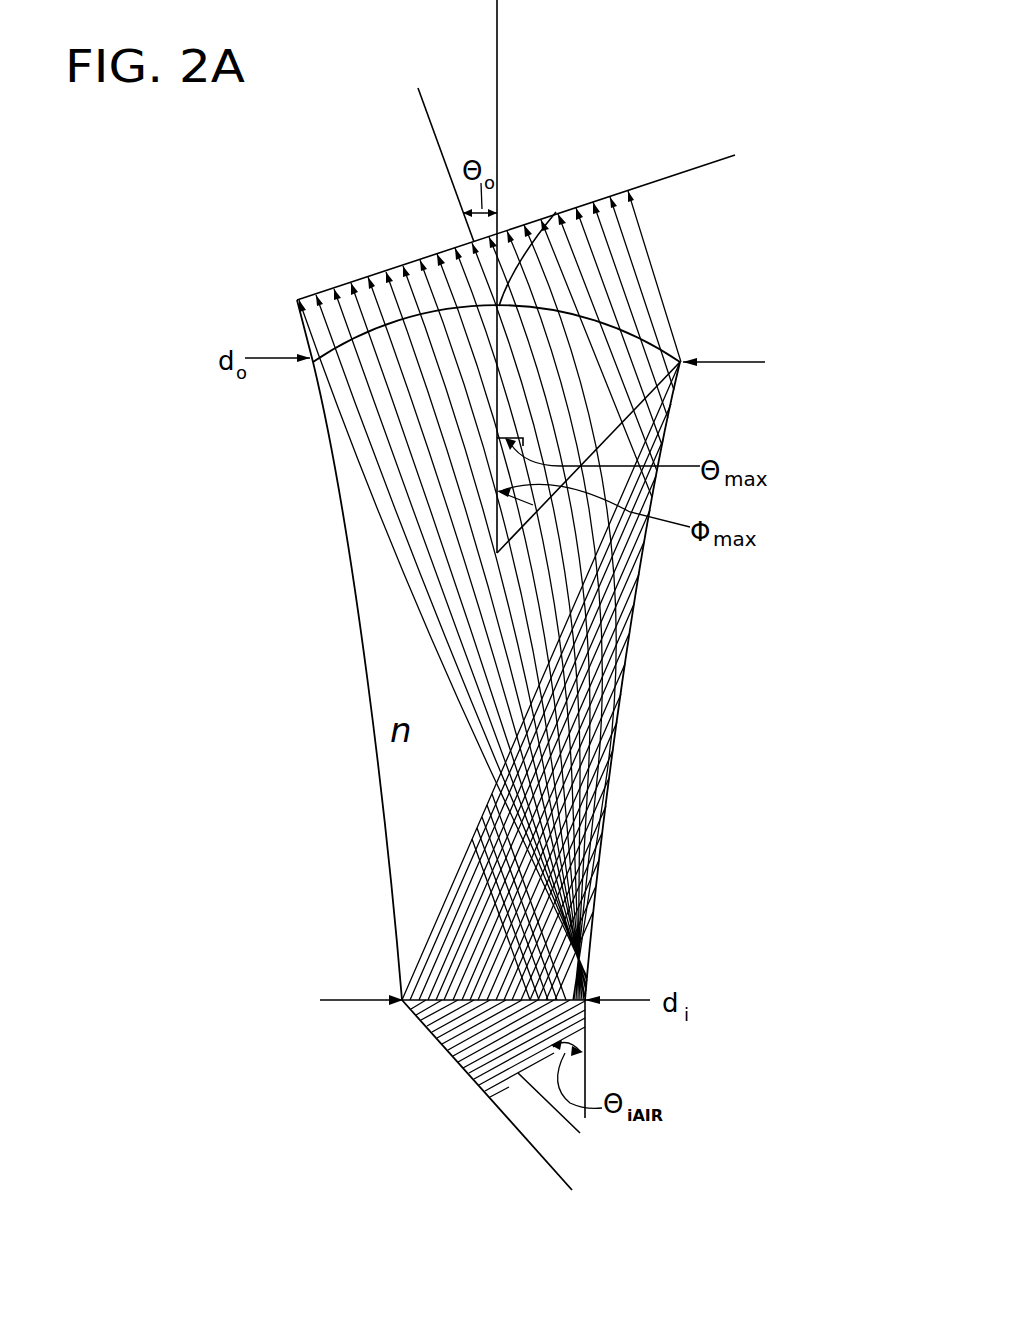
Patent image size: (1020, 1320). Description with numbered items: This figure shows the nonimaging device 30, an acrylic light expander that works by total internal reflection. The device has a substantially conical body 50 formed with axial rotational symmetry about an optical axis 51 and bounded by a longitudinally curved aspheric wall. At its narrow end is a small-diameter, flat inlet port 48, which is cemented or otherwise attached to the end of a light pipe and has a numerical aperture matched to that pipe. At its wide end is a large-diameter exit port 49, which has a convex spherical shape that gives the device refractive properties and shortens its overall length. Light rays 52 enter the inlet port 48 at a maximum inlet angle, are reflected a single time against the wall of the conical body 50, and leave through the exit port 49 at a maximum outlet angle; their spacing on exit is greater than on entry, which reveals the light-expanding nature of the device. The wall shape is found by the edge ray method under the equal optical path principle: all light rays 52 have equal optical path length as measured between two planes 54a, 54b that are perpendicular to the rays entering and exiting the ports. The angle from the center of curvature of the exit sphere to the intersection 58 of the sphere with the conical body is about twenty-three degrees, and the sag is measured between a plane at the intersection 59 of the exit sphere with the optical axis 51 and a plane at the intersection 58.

The nonimaging device 30 is at (469, 713).
The inlet port 48 is at (575, 1005).
The exit port 49 is at (335, 345).
The conical body 50 is at (626, 616).
The optical axis 51 is at (499, 50).
The light rays 52 is at (288, 306).
The plane perpendicular to entering light rays 54a is at (503, 1113).
The plane perpendicular to exiting light rays 54b is at (681, 172).
The intersection of the exit port sphere and the conical body 58 is at (310, 360).
The intersection of the exit port sphere and the optical axis 59 is at (556, 212).